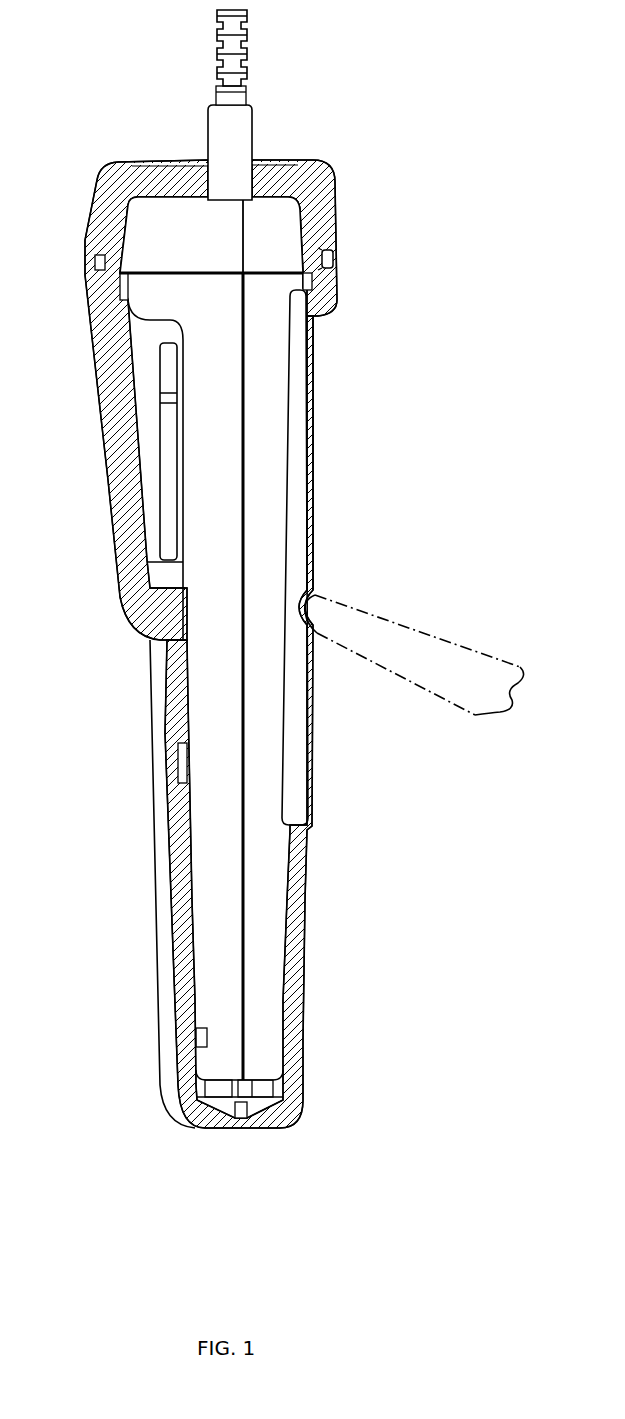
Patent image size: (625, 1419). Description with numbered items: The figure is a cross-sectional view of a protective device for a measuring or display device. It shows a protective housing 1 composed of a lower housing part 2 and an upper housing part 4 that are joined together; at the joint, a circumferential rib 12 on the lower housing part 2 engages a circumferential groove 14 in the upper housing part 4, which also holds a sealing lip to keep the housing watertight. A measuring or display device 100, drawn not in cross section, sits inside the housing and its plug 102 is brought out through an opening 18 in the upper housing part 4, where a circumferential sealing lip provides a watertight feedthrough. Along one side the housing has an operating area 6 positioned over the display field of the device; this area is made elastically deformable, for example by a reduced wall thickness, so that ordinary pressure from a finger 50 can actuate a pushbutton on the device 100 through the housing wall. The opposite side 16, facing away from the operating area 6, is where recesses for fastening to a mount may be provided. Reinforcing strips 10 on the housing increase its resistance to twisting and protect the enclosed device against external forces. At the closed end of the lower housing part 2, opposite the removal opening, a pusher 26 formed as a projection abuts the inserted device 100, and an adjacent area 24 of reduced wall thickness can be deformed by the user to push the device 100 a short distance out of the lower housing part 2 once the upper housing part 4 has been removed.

The protective housing 1 is at (348, 1088).
The lower housing part 2 is at (137, 630).
The upper housing part 4 is at (123, 190).
The operating area 6 is at (312, 518).
The reinforcing strips 10 is at (168, 1078).
The circumferential rib 12 is at (333, 266).
The circumferential groove 14 is at (333, 250).
The side facing away from the operating area 16 is at (112, 523).
The opening 18 is at (270, 162).
The area of reduced wall thickness 24 is at (255, 1130).
The pusher 26 is at (235, 1112).
The finger 50 is at (436, 622).
The measuring or display device 100 is at (265, 458).
The plug 102 is at (235, 122).